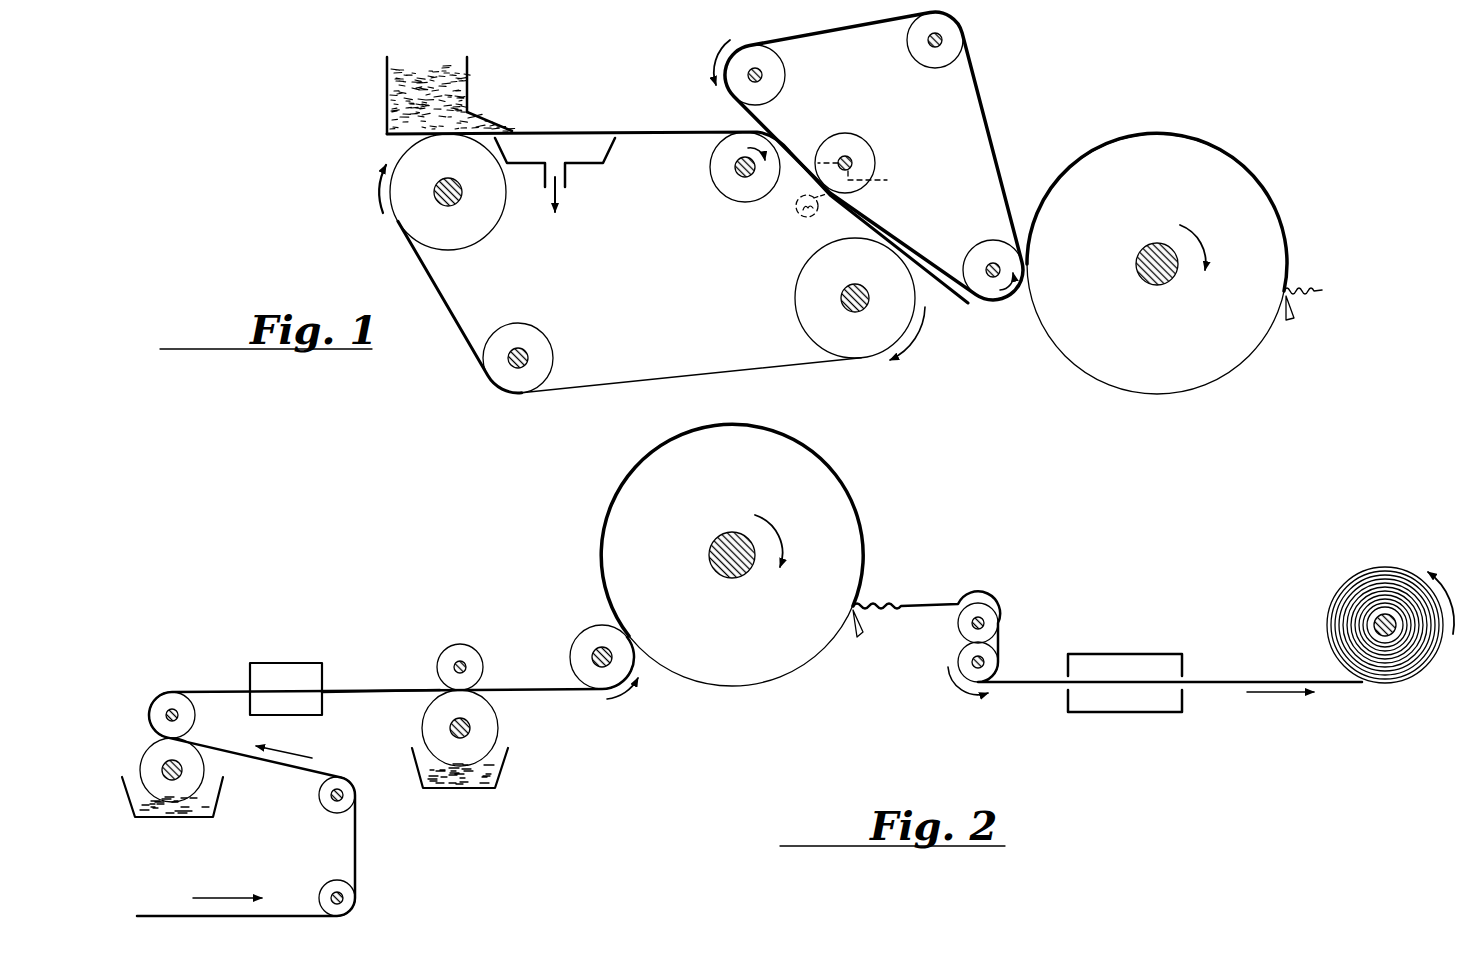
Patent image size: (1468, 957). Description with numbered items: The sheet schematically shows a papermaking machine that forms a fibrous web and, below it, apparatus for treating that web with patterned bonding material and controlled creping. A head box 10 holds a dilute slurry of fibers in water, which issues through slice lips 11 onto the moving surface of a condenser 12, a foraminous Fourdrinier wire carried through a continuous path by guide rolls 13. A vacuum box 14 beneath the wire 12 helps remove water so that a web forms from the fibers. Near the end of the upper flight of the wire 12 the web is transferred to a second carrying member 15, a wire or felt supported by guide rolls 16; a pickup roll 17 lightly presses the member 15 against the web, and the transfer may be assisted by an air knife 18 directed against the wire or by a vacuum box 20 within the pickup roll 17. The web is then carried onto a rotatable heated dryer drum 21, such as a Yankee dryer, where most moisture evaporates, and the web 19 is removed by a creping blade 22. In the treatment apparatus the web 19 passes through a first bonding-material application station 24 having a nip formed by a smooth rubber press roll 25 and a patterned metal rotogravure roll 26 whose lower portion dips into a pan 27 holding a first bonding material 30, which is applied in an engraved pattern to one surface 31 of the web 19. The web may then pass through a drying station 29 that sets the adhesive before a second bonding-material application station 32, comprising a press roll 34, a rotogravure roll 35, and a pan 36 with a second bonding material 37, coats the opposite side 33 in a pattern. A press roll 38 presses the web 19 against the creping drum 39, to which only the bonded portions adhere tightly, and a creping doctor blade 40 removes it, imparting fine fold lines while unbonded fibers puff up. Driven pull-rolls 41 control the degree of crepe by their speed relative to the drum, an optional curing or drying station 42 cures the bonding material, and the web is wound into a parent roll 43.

In FIG. 1, the head box 10 is at (467, 75).
In FIG. 1, the slice lips 11 is at (497, 128).
In FIG. 1, the condenser 12 is at (637, 128).
In FIG. 1, the guide rolls 13 is at (478, 228).
In FIG. 1, the vacuum box 14 is at (614, 160).
In FIG. 1, the second carrying member 15 is at (762, 120).
In FIG. 1, the guide rolls 16 is at (775, 78).
In FIG. 1, the pickup roll 17 is at (860, 136).
In FIG. 1, the air knife 18 is at (813, 220).
In FIG. 1, the web 19 is at (1305, 285).
In FIG. 2, the web 19 is at (262, 916).
In FIG. 1, the vacuum box 20 is at (890, 180).
In FIG. 1, the dryer drum 21 is at (1110, 360).
In FIG. 1, the creping blade 22 is at (1291, 313).
In FIG. 2, the first bonding-material application station 24 is at (181, 771).
In FIG. 2, the press roll 25 is at (190, 712).
In FIG. 2, the rotogravure roll 26 is at (152, 758).
In FIG. 2, the pan 27 is at (127, 802).
In FIG. 2, the drying station 29 is at (285, 662).
In FIG. 2, the first bonding material 30 is at (200, 805).
In FIG. 2, the surface 31 is at (355, 840).
In FIG. 2, the second bonding-material application station 32 is at (478, 702).
In FIG. 2, the opposite side 33 is at (358, 695).
In FIG. 2, the press roll 34 is at (466, 650).
In FIG. 2, the rotogravure roll 35 is at (428, 712).
In FIG. 2, the pan 36 is at (416, 770).
In FIG. 2, the second bonding material 37 is at (500, 770).
In FIG. 2, the press roll 38 is at (594, 635).
In FIG. 2, the creping drum 39 is at (786, 662).
In FIG. 2, the creping doctor blade 40 is at (866, 640).
In FIG. 2, the pull-rolls 41 is at (1003, 735).
In FIG. 2, the curing or drying station 42 is at (1118, 654).
In FIG. 2, the parent roll 43 is at (1353, 595).